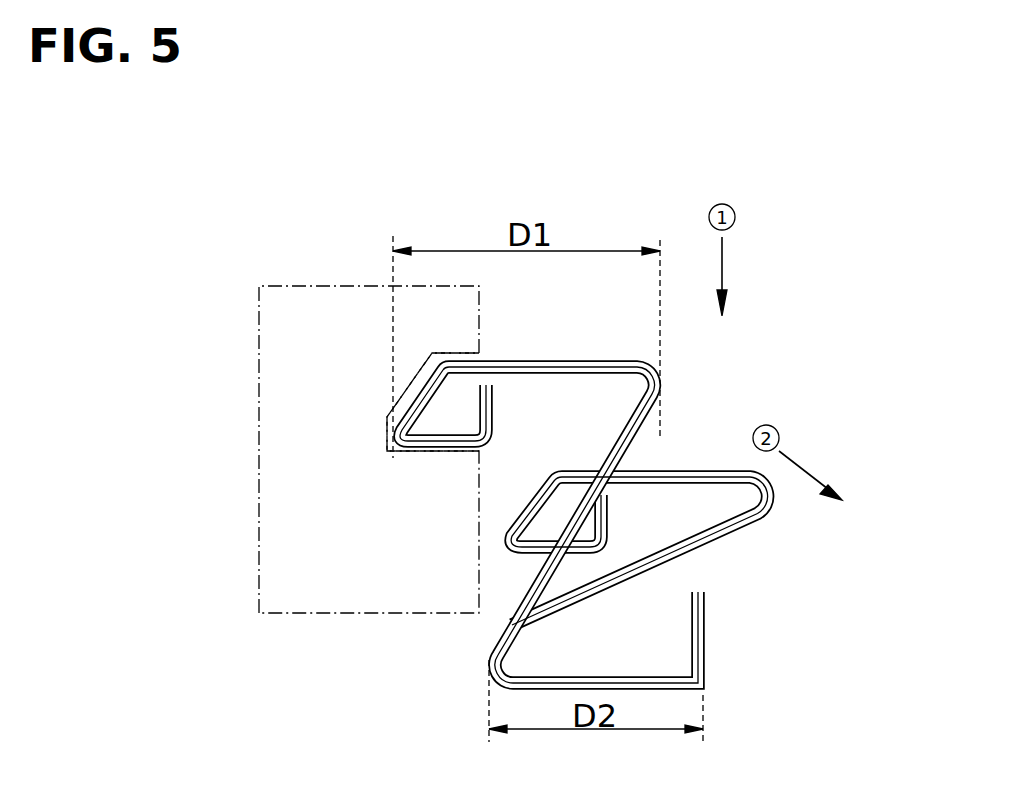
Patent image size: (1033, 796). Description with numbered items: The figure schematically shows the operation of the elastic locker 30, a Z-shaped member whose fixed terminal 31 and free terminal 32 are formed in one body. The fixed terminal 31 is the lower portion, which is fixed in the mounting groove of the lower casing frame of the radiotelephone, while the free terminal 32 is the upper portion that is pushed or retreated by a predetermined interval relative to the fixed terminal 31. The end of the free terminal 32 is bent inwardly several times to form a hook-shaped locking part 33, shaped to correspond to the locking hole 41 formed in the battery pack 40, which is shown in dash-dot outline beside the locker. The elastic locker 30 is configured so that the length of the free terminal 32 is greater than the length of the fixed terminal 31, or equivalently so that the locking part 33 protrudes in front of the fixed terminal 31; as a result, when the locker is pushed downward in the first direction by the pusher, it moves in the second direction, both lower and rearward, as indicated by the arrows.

The elastic locker 30 is at (737, 421).
The fixed terminal 31 is at (615, 677).
The free terminal 32 is at (572, 363).
The locking part 33 is at (517, 522).
The battery pack 40 is at (333, 597).
The locking hole 41 is at (388, 443).